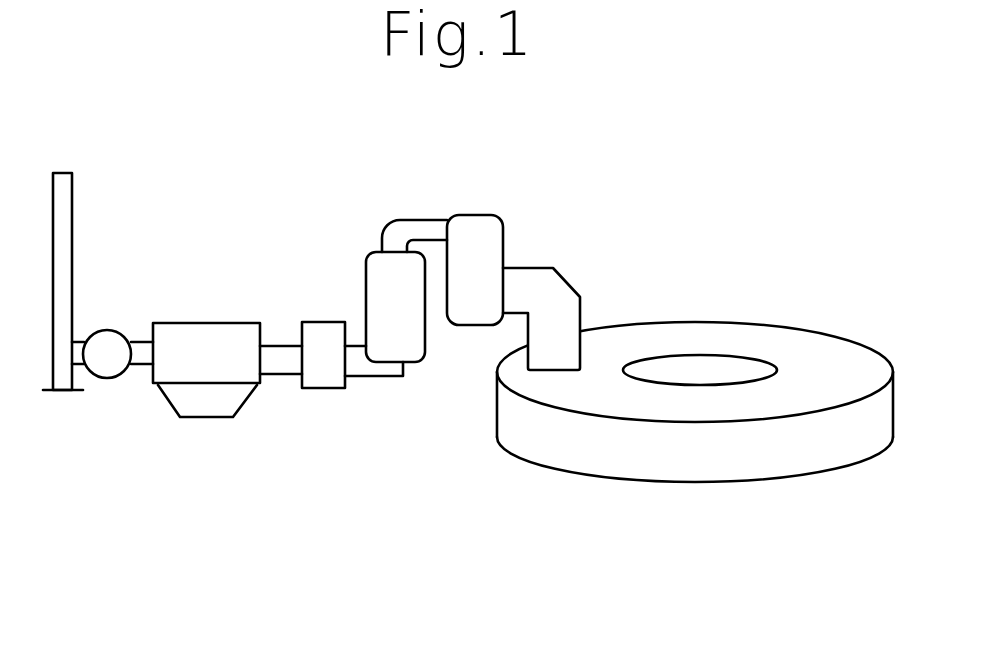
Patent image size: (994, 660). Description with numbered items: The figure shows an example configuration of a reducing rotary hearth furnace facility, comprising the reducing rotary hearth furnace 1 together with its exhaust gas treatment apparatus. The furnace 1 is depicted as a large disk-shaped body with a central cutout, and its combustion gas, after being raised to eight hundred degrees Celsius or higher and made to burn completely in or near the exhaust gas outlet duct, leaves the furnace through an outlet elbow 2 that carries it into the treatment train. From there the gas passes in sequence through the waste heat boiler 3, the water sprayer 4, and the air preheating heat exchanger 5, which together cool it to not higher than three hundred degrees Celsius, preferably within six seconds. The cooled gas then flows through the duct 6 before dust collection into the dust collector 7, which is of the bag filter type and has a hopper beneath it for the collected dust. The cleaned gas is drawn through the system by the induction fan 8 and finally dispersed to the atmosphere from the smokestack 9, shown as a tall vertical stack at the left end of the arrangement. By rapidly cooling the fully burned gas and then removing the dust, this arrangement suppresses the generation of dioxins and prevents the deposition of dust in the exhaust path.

The reducing rotary hearth furnace 1 is at (810, 353).
The nozzle elbow 2 is at (563, 310).
The waste heat boiler 3 is at (485, 233).
The water sprayer 4 is at (377, 302).
The heat exchanger (air preheater) 5 is at (312, 333).
The duct before dust collection 6 is at (173, 338).
The dust collector 7 is at (225, 403).
The induction fan 8 is at (105, 365).
The smokestack 9 is at (63, 208).